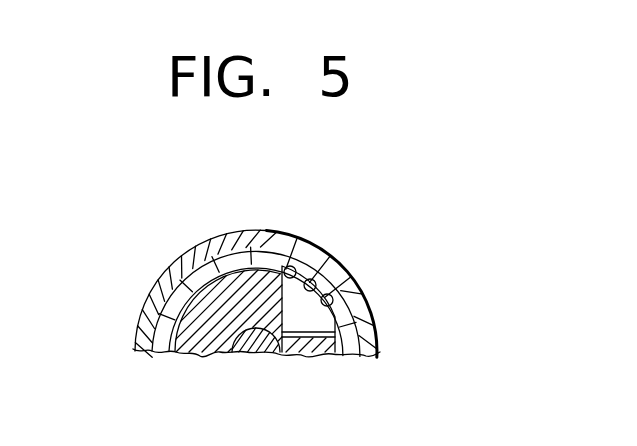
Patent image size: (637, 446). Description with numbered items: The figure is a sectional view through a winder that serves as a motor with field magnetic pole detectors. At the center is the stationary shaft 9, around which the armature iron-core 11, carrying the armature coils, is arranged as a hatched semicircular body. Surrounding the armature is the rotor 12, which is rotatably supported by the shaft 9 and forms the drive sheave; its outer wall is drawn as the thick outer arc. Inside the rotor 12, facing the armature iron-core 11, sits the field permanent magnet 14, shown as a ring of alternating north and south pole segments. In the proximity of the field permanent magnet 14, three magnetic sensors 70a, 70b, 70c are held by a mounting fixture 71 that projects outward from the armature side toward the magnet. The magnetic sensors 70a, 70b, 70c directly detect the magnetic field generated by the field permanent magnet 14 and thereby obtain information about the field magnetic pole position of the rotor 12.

The stationary shaft 9 is at (254, 352).
The armature iron-core 11 is at (202, 330).
The rotor 12 is at (370, 298).
The field permanent magnet 14 is at (250, 248).
The magnetic sensor 70a is at (292, 265).
The magnetic sensor 70b is at (312, 278).
The magnetic sensor 70c is at (334, 297).
The mounting fixture 71 is at (302, 320).